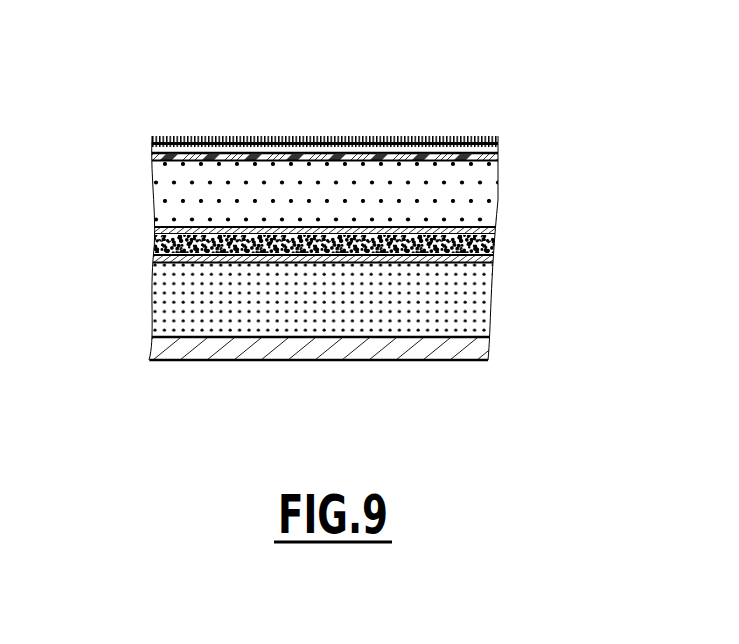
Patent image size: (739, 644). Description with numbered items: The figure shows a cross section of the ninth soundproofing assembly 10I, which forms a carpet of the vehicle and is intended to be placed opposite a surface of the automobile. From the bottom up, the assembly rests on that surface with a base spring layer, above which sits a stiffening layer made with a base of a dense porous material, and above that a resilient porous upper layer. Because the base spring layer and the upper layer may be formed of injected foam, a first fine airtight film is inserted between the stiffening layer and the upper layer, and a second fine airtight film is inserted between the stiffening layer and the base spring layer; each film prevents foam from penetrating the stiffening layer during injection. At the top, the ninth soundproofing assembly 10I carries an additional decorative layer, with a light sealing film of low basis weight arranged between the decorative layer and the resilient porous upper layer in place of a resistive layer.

The ninth soundproofing assembly 10I is at (319, 250).